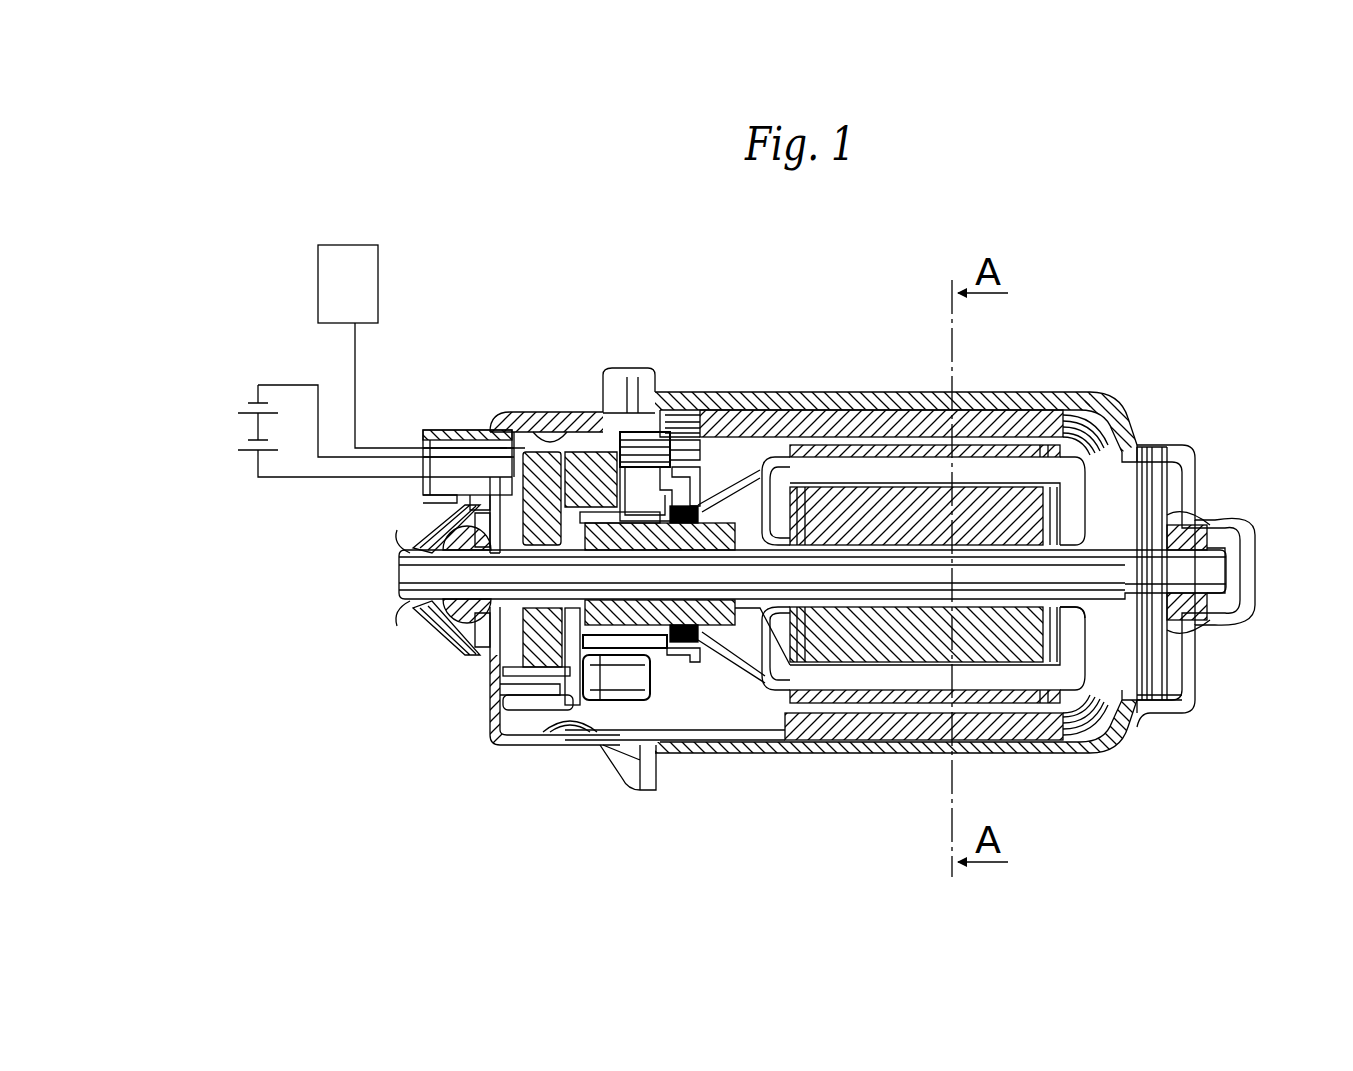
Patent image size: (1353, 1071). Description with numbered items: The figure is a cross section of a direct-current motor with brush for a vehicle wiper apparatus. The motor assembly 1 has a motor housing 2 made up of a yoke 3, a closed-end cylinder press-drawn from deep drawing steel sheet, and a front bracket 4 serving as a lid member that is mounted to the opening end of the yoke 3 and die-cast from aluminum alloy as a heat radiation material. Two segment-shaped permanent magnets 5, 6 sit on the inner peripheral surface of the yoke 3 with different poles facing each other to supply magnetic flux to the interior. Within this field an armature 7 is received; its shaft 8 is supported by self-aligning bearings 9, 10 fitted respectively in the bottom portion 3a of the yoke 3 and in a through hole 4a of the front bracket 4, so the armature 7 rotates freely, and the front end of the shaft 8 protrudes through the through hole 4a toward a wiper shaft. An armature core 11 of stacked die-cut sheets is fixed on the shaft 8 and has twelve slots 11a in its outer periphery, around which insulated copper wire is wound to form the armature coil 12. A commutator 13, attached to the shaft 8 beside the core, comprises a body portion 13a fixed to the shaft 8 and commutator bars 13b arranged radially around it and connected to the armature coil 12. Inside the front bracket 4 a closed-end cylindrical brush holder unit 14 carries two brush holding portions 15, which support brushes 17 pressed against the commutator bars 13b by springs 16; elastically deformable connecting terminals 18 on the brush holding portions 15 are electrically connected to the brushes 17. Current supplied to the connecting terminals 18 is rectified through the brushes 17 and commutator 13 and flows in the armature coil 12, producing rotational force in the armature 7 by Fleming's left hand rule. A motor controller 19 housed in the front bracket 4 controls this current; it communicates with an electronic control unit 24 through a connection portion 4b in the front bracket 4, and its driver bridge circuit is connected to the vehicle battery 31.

The motor assembly 1 is at (1125, 335).
The motor housing 2 is at (1112, 388).
The yoke 3 is at (912, 392).
The bottom portion 3a is at (1223, 630).
The front bracket 4 is at (523, 410).
The through hole 4a is at (405, 536).
The connection portion 4b is at (458, 430).
The permanent magnet 5 is at (1010, 410).
The permanent magnet 6 is at (1028, 740).
The armature 7 is at (768, 695).
The shaft 8 is at (408, 578).
The self-aligning bearing 9 is at (1190, 523).
The self-aligning bearing 10 is at (462, 628).
The armature core 11 is at (832, 640).
The slot 11a is at (1082, 750).
The armature coil 12 is at (905, 673).
The commutator 13 is at (705, 501).
The body portion 13a is at (718, 523).
The commutator bar 13b is at (695, 643).
The brush holder unit 14 is at (590, 452).
The brush holding portion 15 is at (702, 488).
The spring 16 is at (633, 432).
The brush 17 is at (660, 467).
The connecting terminal 18 is at (684, 440).
The motor controller 19 is at (560, 735).
The electronic control unit (ECU) 24 is at (378, 282).
The battery 31 is at (240, 450).